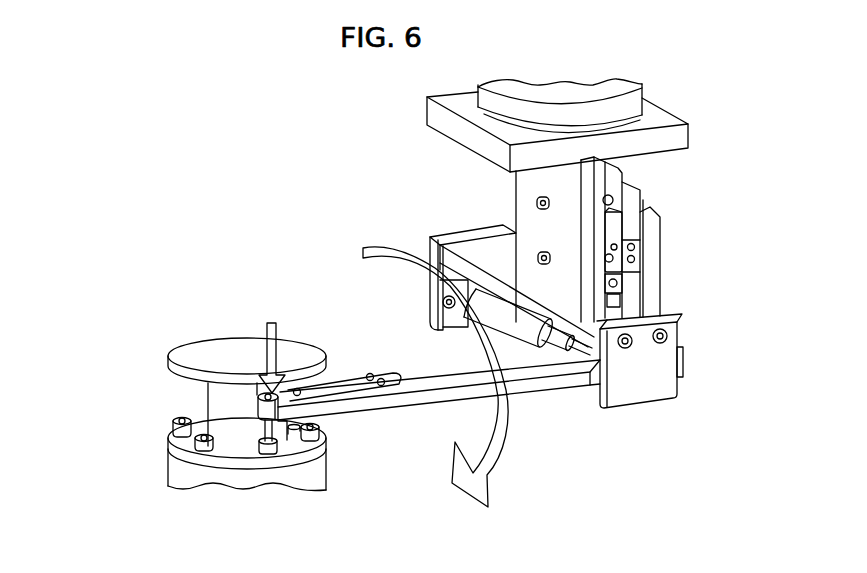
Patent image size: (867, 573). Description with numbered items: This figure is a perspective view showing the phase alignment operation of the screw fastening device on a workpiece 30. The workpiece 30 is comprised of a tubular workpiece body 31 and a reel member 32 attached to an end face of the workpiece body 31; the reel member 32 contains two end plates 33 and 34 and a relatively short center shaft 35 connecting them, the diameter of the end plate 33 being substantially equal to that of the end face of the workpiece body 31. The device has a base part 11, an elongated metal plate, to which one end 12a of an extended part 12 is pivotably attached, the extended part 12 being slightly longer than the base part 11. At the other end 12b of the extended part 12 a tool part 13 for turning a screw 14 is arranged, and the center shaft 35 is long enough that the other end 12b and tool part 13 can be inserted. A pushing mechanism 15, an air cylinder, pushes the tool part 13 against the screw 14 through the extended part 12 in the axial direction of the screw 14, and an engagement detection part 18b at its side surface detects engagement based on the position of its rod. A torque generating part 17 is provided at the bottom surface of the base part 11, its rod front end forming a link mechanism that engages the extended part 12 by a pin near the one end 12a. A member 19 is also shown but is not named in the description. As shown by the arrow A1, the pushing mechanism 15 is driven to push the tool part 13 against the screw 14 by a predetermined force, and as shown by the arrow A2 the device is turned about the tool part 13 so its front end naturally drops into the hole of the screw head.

The mounting plate (substrate holder) 19 is at (686, 136).
The pushing mechanism 15 is at (648, 199).
The base part 11 is at (481, 242).
The engagement detection part 18b is at (613, 227).
The one end of the extended part 12a is at (682, 363).
The torque generating part 17 is at (508, 322).
The extended part 12 is at (538, 386).
The other end of the extended part 12b is at (296, 412).
The screw 14 is at (266, 456).
The tool part 13 is at (280, 430).
The workpiece 30 is at (115, 391).
The reel member 32 is at (167, 391).
The end plate 34 is at (205, 353).
The center shaft 35 is at (212, 403).
The end plate 33 is at (177, 434).
The workpiece body 31 is at (177, 472).
The arrow A1 is at (272, 323).
The arrow A2 is at (388, 246).